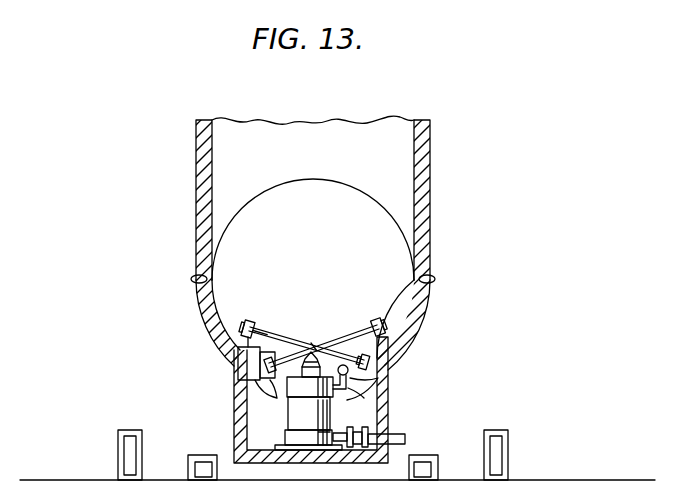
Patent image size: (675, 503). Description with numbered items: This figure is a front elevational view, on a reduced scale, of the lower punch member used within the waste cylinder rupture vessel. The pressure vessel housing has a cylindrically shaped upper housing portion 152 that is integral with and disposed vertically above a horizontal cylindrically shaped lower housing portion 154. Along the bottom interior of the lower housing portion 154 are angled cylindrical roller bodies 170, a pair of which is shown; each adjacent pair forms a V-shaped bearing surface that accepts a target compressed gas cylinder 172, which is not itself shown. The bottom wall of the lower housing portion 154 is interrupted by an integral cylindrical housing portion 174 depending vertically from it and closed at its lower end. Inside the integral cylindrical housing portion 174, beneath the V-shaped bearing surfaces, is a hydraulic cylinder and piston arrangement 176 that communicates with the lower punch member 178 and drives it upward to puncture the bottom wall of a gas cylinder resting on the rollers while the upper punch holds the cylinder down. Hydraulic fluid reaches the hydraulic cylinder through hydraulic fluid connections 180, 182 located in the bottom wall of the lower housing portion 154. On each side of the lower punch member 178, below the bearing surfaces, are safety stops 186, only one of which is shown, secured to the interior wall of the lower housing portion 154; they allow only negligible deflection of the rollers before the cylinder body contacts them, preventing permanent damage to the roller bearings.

The upper housing portion 152 is at (420, 137).
The lower housing portion 154 is at (428, 330).
The angled cylindrical roller bodies 170 is at (348, 343).
The target compressed gas cylinder 172 is at (303, 311).
The integral cylindrical housing portion 174 is at (389, 410).
The hydraulic cylinder and piston arrangement 176 is at (292, 386).
The lower punch member 178 is at (308, 401).
The hydraulic fluid connection 180 is at (380, 382).
The hydraulic fluid connection 182 is at (405, 438).
The safety stop 186 is at (250, 392).